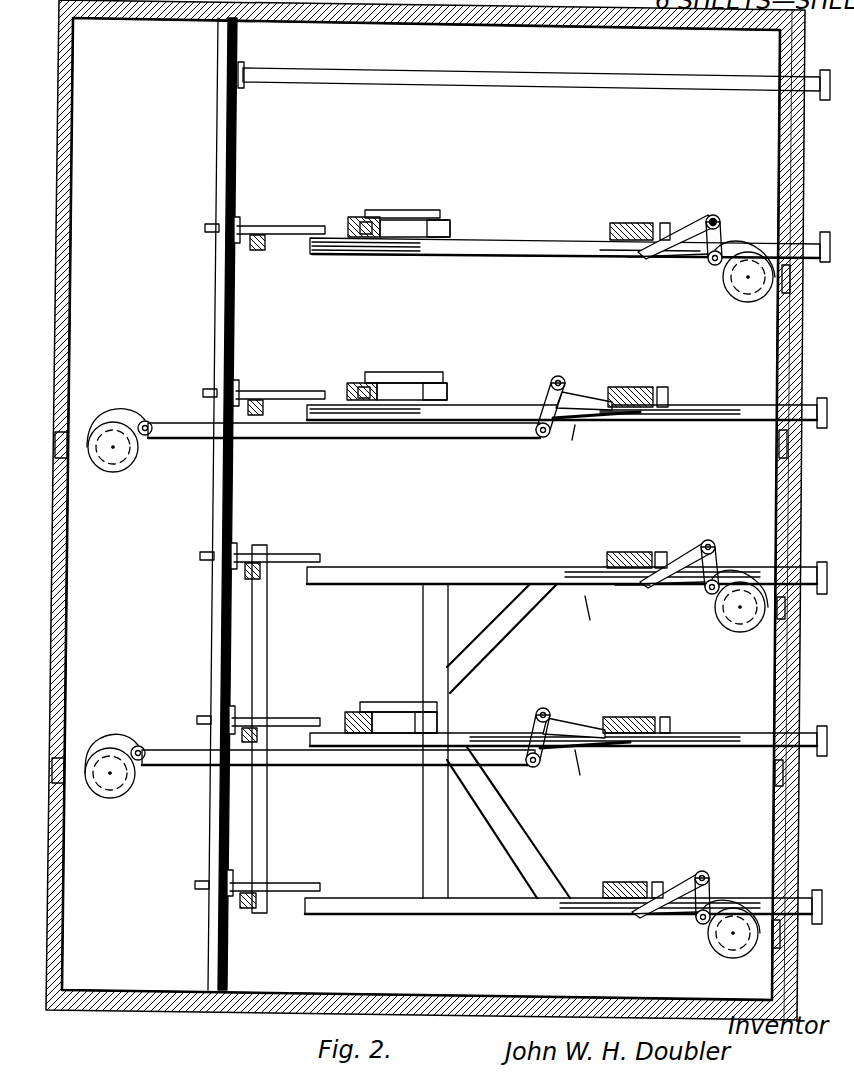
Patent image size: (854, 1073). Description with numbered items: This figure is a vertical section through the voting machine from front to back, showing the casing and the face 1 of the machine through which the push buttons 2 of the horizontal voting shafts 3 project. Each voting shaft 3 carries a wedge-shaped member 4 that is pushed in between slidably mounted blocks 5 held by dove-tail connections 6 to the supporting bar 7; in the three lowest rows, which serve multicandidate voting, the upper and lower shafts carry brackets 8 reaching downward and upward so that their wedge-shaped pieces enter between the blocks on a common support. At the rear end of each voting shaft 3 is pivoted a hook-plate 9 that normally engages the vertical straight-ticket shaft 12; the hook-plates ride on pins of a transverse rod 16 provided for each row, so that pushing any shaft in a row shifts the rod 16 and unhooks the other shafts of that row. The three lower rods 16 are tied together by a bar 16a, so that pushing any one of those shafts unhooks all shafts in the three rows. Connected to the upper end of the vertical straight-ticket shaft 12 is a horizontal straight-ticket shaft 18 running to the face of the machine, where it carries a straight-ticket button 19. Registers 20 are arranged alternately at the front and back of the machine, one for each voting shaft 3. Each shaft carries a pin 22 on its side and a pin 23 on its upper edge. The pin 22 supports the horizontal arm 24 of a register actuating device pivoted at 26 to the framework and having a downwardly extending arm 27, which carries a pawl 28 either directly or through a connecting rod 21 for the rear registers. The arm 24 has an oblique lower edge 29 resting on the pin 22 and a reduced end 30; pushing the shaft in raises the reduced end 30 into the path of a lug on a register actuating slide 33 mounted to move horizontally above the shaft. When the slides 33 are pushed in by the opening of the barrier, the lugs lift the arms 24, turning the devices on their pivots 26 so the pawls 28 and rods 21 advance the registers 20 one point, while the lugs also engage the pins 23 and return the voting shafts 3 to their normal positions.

The face of the machine 1 is at (800, 380).
The push buttons 2 is at (822, 430).
The voting shafts 3 is at (540, 256).
The wedge-shaped member 4 is at (428, 218).
The slidably mounted blocks 5 is at (366, 214).
The dove-tail connections 6 is at (368, 236).
The supporting bar 7 is at (348, 232).
The brackets 8 is at (422, 637).
The hook-plate 9 is at (301, 231).
The vertical straight-ticket shaft 12 is at (216, 316).
The transverse rod 16 is at (258, 252).
The bar 16a is at (268, 640).
The horizontal straight-ticket shaft 18 is at (512, 90).
The straight-ticket button 19 is at (824, 102).
The registers 20 is at (429, 621).
The rods 21 is at (440, 440).
The pin 22 is at (668, 257).
The pin 23 is at (672, 216).
The horizontal arm 24 is at (648, 262).
The pivot 26 is at (720, 218).
The downwardly extending arm 27 is at (722, 246).
The pawls 28 is at (748, 298).
The oblique lower edge 29 is at (572, 442).
The reduced end 30 is at (632, 416).
The register actuating slides 33 is at (632, 223).